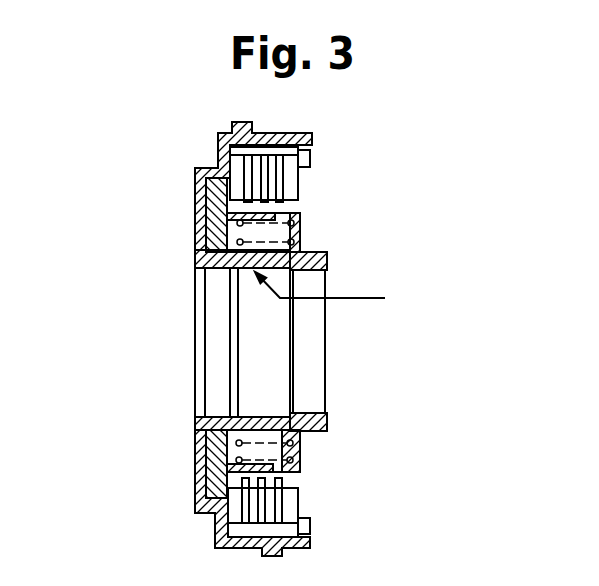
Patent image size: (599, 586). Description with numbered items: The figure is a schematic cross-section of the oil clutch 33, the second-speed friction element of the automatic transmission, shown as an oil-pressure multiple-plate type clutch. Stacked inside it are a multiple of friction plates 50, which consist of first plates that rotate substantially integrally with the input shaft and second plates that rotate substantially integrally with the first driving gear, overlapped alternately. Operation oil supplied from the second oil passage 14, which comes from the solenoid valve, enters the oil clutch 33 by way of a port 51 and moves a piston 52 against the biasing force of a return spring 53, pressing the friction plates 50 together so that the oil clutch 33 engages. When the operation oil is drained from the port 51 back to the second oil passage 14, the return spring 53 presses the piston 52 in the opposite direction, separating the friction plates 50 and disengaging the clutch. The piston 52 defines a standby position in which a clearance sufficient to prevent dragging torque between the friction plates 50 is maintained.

The oil clutch 33 is at (195, 190).
The friction plates 50 is at (300, 510).
The port 51 is at (255, 272).
The piston 52 is at (215, 455).
The return spring 53 is at (300, 453).
The second oil passage 14 is at (363, 295).